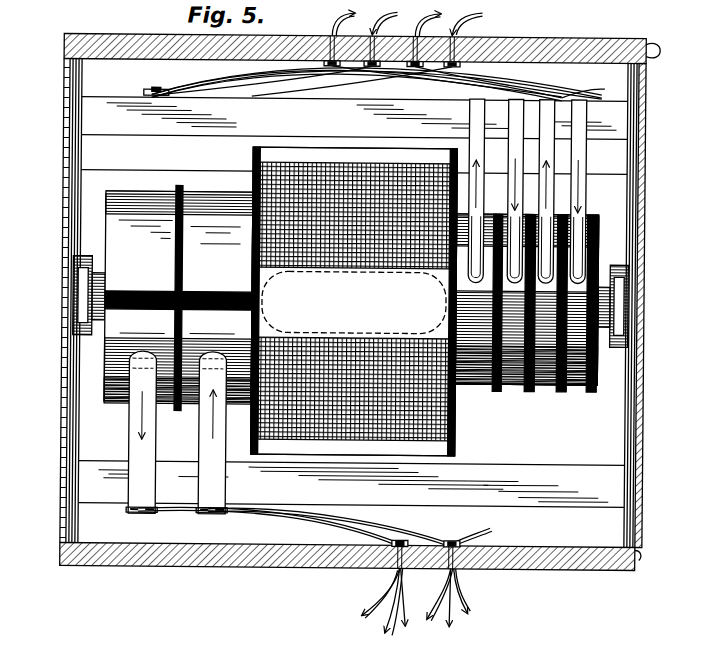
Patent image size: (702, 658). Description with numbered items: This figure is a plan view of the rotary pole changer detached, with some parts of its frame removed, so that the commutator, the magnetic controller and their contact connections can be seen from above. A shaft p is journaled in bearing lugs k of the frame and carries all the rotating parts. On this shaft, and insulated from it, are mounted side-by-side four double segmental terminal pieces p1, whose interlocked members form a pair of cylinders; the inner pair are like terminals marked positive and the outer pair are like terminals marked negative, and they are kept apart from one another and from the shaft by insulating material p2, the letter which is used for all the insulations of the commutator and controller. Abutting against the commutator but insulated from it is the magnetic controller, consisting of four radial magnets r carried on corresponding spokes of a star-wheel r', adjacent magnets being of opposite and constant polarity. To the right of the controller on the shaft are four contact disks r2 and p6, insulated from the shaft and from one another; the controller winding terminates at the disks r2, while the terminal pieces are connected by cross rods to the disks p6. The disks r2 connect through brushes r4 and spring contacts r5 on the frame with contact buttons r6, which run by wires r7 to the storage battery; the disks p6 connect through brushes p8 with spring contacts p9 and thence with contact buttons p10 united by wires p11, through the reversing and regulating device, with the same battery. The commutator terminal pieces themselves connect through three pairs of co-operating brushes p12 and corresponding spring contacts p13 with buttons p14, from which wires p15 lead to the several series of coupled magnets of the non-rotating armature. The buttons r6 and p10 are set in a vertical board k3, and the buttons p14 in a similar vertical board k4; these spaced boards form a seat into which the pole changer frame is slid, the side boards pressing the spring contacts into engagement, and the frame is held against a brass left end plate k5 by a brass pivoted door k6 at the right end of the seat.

The bearing lugs k is at (612, 330).
The vertical board k3 is at (606, 40).
The vertical board k4 is at (585, 570).
The left end plate k5 is at (72, 252).
The pivoted door k6 is at (632, 246).
The shaft p is at (622, 300).
The double segmental terminal pieces p1 is at (125, 212).
The insulating material p2 is at (180, 196).
The contact disks p6 is at (552, 388).
The brushes p8 is at (552, 138).
The spring contacts p9 is at (541, 89).
The contact buttons p10 is at (455, 40).
The wires p11 is at (416, 40).
The brushes p12 is at (135, 492).
The spring contacts p13 is at (338, 522).
The contact buttons p14 is at (463, 551).
The wires p15 is at (390, 591).
The radial magnets r is at (367, 286).
The star-wheel r' is at (354, 303).
The contact disks r2 is at (485, 390).
The brushes r4 is at (474, 122).
The spring contacts r5 is at (236, 88).
The contact buttons r6 is at (342, 72).
The wires r7 is at (380, 38).